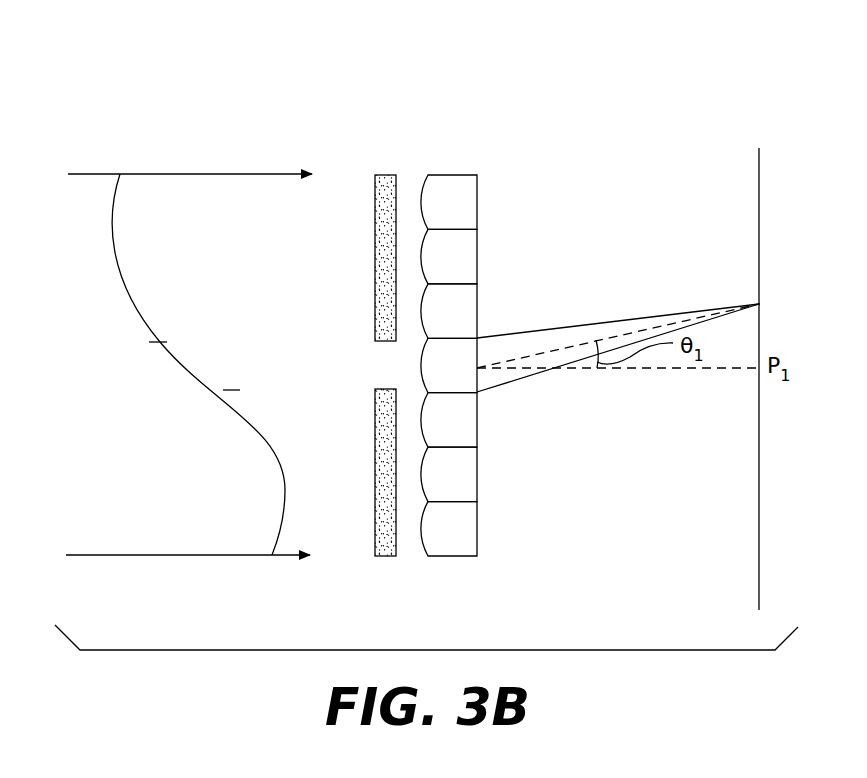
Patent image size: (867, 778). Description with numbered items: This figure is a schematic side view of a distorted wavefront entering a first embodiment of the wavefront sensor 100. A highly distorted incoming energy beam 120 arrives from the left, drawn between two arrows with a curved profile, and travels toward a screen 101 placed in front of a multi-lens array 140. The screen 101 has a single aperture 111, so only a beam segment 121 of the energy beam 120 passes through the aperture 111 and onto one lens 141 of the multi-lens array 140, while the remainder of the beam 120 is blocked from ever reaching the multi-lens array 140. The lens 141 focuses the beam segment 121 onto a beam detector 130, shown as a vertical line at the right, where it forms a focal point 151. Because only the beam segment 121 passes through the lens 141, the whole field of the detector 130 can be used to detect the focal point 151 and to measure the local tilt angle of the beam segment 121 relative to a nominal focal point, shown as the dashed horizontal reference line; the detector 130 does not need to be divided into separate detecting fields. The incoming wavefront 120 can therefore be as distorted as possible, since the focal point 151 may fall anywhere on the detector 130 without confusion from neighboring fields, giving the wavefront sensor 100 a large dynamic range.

The wavefront sensor 100 is at (520, 80).
The screen 101 is at (363, 329).
The aperture 111 is at (376, 367).
The energy beam 120 is at (188, 557).
The beam segment 121 is at (192, 363).
The beam detector 130 is at (760, 183).
The multi-lens array 140 is at (490, 329).
The lens 141 is at (465, 373).
The focal point 151 is at (760, 304).